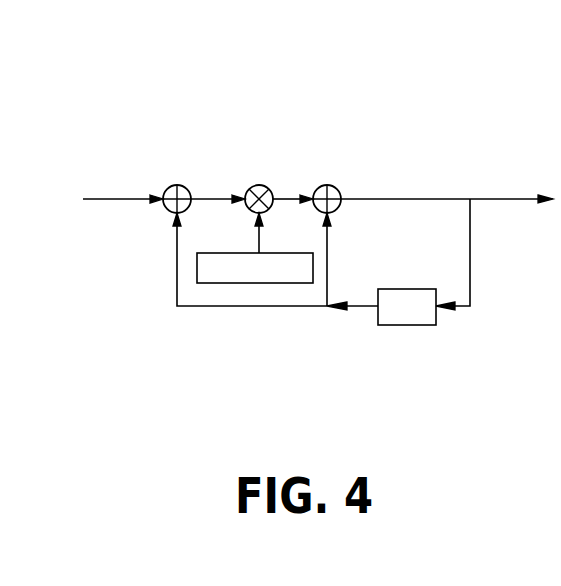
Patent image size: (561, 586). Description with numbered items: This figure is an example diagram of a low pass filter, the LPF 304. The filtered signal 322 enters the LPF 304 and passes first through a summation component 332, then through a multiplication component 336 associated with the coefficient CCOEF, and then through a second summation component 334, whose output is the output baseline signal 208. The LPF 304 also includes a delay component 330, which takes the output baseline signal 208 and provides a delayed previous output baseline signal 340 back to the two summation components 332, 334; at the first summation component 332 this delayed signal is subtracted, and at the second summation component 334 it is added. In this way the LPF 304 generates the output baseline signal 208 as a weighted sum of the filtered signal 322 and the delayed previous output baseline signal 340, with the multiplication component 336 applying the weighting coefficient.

The LPF 304 is at (82, 97).
The filtered signal 322 is at (100, 199).
The summation component 332 is at (177, 184).
The multiplication component 336 is at (258, 185).
The summation component 334 is at (326, 185).
The output baseline signal 208 is at (480, 200).
The delay component 330 is at (410, 326).
The delayed previous output baseline signal 340 is at (365, 308).